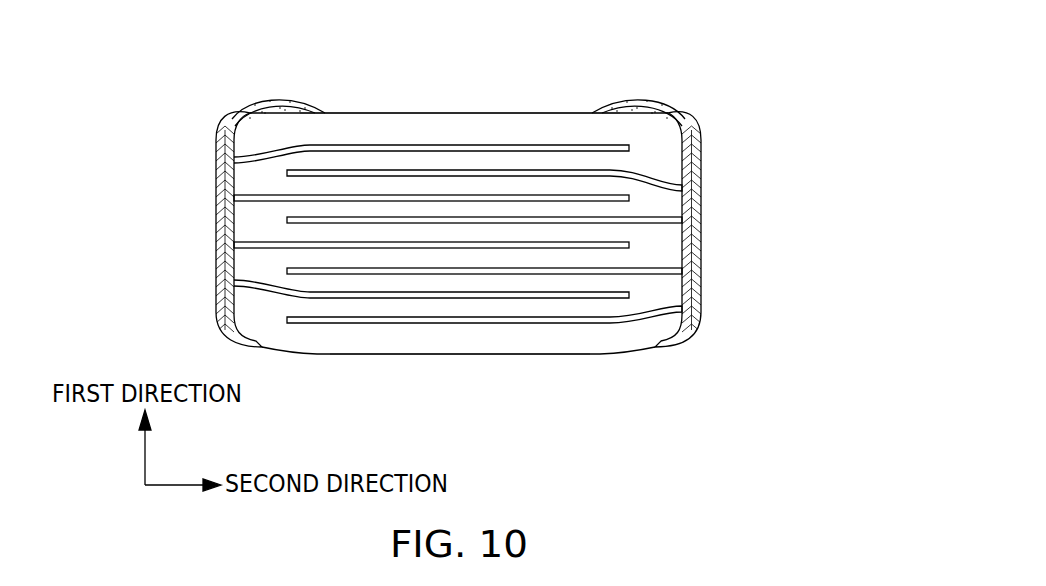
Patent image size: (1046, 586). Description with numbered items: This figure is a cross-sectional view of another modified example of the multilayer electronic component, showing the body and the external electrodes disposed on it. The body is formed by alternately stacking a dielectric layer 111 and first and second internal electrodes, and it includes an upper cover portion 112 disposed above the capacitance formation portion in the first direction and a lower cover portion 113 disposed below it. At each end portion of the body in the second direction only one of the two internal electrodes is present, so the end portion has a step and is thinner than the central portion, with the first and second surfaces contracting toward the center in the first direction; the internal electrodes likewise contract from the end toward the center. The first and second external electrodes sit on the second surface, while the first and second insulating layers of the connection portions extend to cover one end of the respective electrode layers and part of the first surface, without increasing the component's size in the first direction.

The dielectric layer 111 is at (510, 162).
The upper cover portion 112 is at (345, 125).
The lower cover portion 113 is at (453, 354).